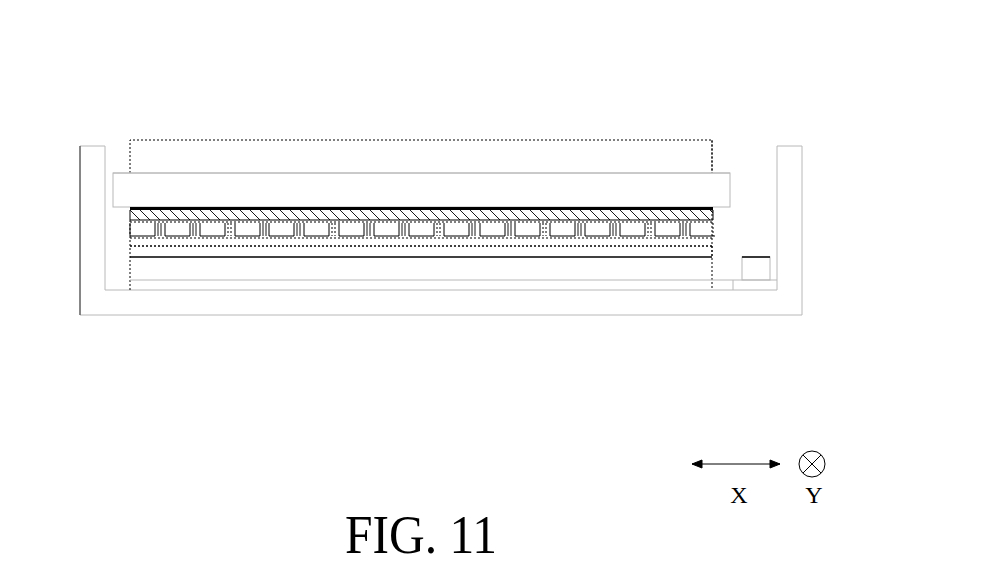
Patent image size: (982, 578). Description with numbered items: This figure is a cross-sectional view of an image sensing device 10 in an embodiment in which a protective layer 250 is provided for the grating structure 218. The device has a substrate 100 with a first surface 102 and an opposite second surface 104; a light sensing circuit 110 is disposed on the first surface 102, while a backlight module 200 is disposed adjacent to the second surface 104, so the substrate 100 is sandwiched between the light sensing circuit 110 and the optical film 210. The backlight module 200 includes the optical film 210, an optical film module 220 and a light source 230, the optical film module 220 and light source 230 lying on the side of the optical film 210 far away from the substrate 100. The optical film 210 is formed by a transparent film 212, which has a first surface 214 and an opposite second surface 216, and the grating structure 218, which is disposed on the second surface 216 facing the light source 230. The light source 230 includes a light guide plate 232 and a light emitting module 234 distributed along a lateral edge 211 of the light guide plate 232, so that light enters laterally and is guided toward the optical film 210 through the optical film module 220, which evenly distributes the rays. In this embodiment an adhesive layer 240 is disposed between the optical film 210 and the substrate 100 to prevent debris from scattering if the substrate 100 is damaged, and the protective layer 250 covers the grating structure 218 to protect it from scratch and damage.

The image sensing device 10 is at (77, 76).
The substrate 100 is at (167, 193).
The first surface 102 is at (222, 173).
The second surface 104 is at (293, 208).
The light sensing circuit 110 is at (367, 160).
The protective layer 250 is at (490, 237).
The adhesive layer 240 is at (580, 208).
The lateral edge 211 is at (714, 264).
The first surface 214 is at (138, 213).
The second surface 216 is at (165, 228).
The optical film module 220 is at (638, 250).
The light guide plate 232 is at (695, 268).
The light emitting module 234 is at (755, 270).
The grating structure 218 is at (713, 240).
The transparent film 212 is at (712, 215).
The light source 230 is at (698, 362).
The optical film 210 is at (781, 357).
The backlight module 200 is at (735, 400).